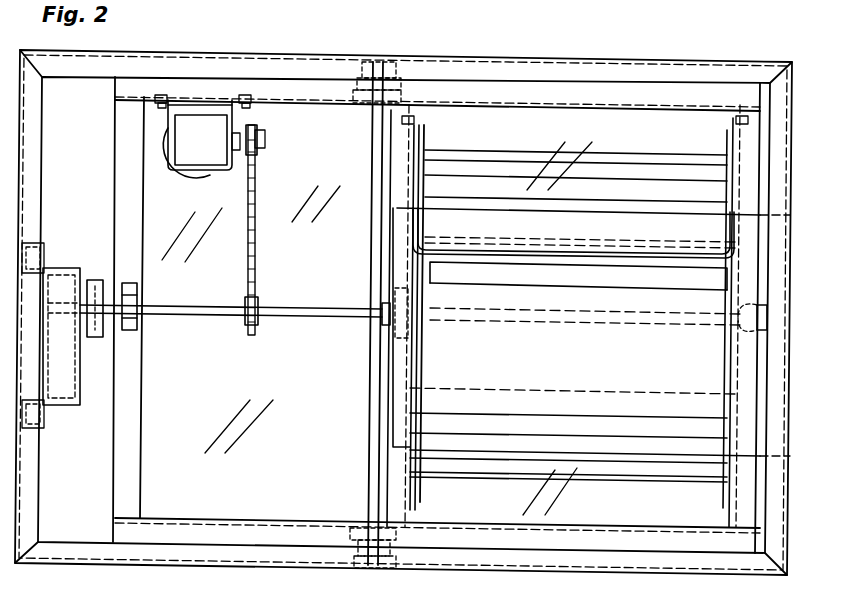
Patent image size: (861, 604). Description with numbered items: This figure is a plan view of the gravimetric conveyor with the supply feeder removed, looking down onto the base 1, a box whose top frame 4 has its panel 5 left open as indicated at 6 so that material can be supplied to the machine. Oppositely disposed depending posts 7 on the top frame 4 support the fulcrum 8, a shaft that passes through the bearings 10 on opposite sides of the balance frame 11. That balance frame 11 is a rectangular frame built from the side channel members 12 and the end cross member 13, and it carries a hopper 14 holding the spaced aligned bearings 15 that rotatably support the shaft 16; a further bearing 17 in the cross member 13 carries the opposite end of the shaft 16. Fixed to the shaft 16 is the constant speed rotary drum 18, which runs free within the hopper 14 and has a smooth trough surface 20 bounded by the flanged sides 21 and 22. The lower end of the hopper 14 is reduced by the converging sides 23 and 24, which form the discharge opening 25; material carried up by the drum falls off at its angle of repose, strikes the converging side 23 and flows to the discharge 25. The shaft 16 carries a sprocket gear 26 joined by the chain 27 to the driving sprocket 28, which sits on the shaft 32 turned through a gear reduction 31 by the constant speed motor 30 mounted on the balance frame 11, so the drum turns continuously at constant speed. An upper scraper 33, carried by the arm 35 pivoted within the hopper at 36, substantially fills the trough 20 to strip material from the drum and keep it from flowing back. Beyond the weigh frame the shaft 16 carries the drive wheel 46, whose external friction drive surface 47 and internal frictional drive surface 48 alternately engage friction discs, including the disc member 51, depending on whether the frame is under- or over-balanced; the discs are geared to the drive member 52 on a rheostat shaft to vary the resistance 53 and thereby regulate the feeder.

The base 1 is at (718, 563).
The top frame 4 is at (612, 78).
The panel 5 is at (616, 127).
The opening 6 is at (532, 218).
The depending posts 7 is at (362, 60).
The fulcrum 8 is at (376, 383).
The bearings 10 is at (398, 78).
The balance frame 11 is at (498, 92).
The side channel members 12 is at (203, 95).
The end cross member 13 is at (130, 363).
The hopper 14 is at (392, 462).
The bearings 15 is at (384, 300).
The shaft 16 is at (290, 318).
The bearing 17 is at (138, 290).
The constant speed rotary drum 18 is at (556, 361).
The trough surface 20 is at (628, 361).
The flanged side 21 is at (428, 132).
The flanged side 22 is at (727, 148).
The converging side 23 is at (448, 503).
The converging side 24 is at (498, 128).
The discharge opening 25 is at (466, 396).
The sprocket gear 26 is at (254, 300).
The chain 27 is at (257, 190).
The driving sprocket 28 is at (257, 130).
The motor 30 is at (195, 190).
The gear reduction 31 is at (192, 128).
The shaft 32 is at (265, 144).
The upper scraper 33 is at (622, 273).
The arm 35 is at (420, 218).
The pivot 36 is at (404, 121).
The drive wheel 46 is at (100, 280).
The external friction drive surface 47 is at (97, 337).
The internal frictional drive surface 48 is at (88, 316).
The disc member 51 is at (90, 300).
The drive member 52 is at (52, 355).
The resistance 53 is at (62, 410).